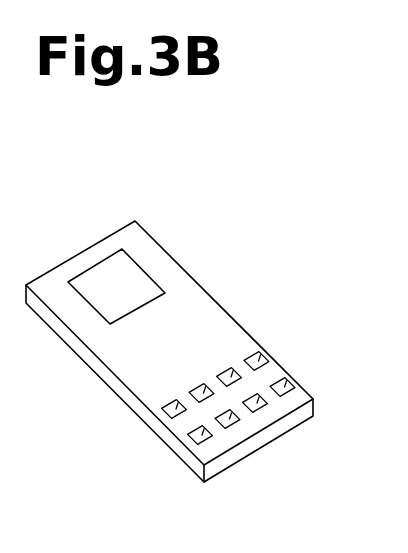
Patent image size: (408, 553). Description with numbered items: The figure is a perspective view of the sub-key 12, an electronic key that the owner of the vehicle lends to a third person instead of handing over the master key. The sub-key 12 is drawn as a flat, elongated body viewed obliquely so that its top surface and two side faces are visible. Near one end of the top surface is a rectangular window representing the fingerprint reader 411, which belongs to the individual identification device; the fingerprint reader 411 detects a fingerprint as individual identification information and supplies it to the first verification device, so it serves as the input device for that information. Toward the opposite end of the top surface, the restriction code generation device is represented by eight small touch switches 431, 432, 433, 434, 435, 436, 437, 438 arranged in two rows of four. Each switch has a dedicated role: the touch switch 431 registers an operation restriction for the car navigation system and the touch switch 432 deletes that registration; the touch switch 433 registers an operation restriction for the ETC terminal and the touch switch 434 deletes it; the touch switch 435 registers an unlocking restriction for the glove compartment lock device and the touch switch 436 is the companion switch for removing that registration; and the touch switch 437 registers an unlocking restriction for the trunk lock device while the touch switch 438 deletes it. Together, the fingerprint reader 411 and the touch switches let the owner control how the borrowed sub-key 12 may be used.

The sub-key 12 is at (228, 219).
The fingerprint reader 411 is at (100, 270).
The touch switch 431 is at (163, 410).
The touch switch 432 is at (187, 437).
The touch switch 433 is at (199, 390).
The touch switch 434 is at (227, 424).
The touch switch 435 is at (229, 369).
The touch switch 436 is at (257, 413).
The touch switch 437 is at (247, 357).
The touch switch 438 is at (303, 360).